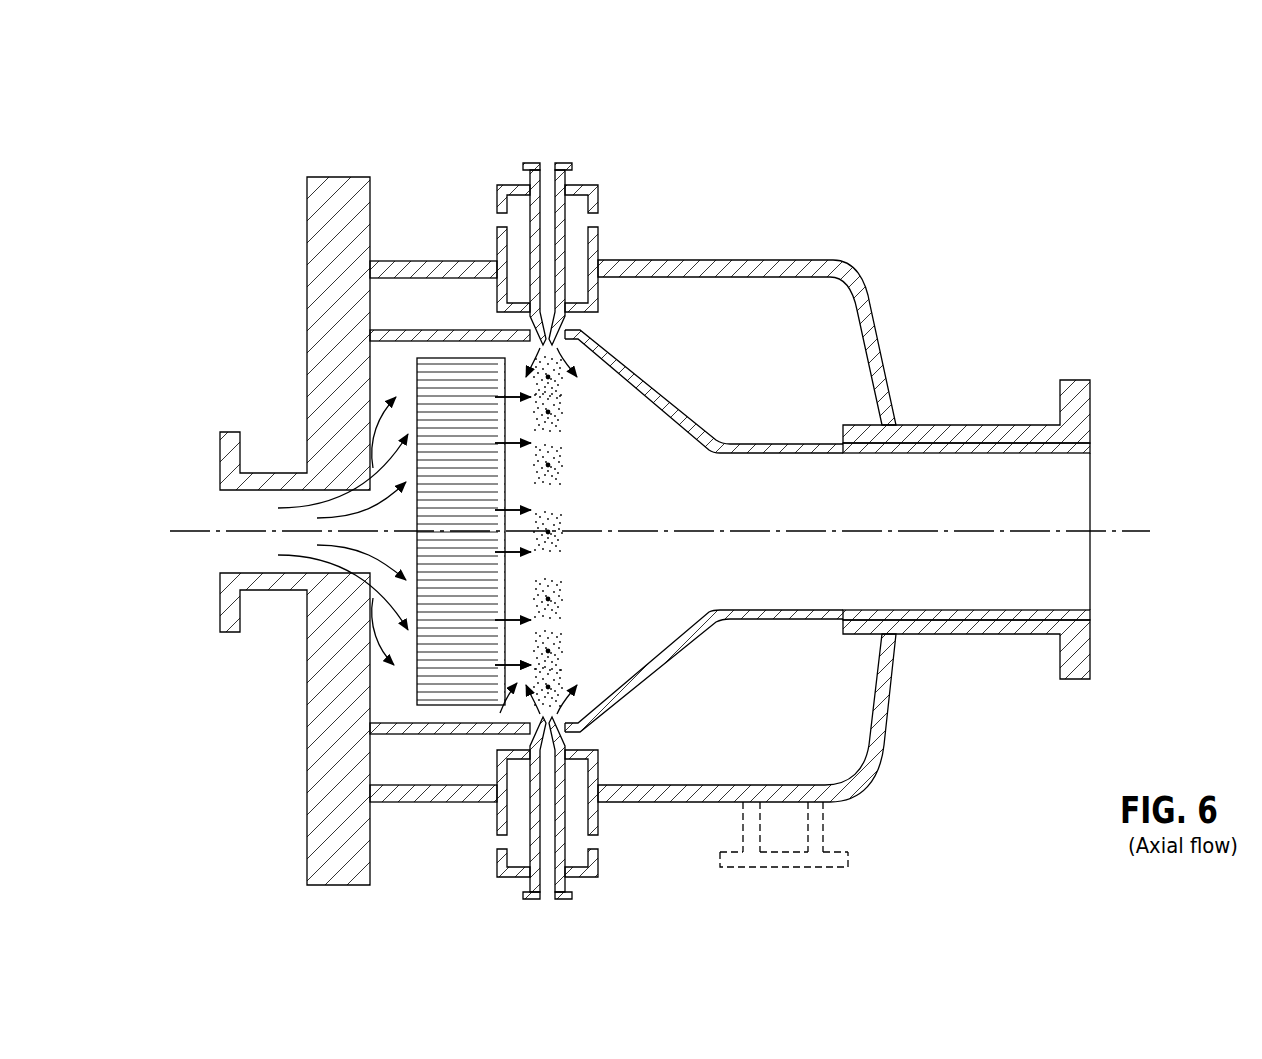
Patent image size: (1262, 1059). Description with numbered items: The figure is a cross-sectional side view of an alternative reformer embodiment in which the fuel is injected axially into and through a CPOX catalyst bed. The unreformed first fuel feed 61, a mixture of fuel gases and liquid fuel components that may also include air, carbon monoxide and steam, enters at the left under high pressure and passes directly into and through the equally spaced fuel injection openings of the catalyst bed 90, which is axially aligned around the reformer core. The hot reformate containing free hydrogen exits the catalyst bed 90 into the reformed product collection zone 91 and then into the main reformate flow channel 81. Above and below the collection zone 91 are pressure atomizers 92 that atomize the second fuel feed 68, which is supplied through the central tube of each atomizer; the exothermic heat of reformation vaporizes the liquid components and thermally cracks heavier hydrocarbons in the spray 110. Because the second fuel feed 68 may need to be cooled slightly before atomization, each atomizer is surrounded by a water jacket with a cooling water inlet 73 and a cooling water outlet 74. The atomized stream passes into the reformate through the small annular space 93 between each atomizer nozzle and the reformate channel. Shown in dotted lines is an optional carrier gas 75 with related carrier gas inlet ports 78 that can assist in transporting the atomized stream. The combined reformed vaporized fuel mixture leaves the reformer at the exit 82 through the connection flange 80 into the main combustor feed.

The unreformed first fuel feed 61 is at (300, 518).
The second fuel feed 68 is at (548, 257).
The cooling water inlet 73 is at (574, 280).
The cooling water outlet 74 is at (517, 220).
The optional carrier gas 75 is at (785, 838).
The carrier gas inlet ports 78 is at (808, 443).
The connection flange 80 is at (1075, 433).
The main reformate flow channel 81 is at (708, 520).
The reformer exit 82 is at (1143, 511).
The catalyst bed 90 is at (463, 474).
The reformed product collection zone 91 is at (628, 562).
The pressure atomizers 92 is at (548, 290).
The small annular space 93 is at (533, 328).
The spray droplets 110 is at (562, 647).